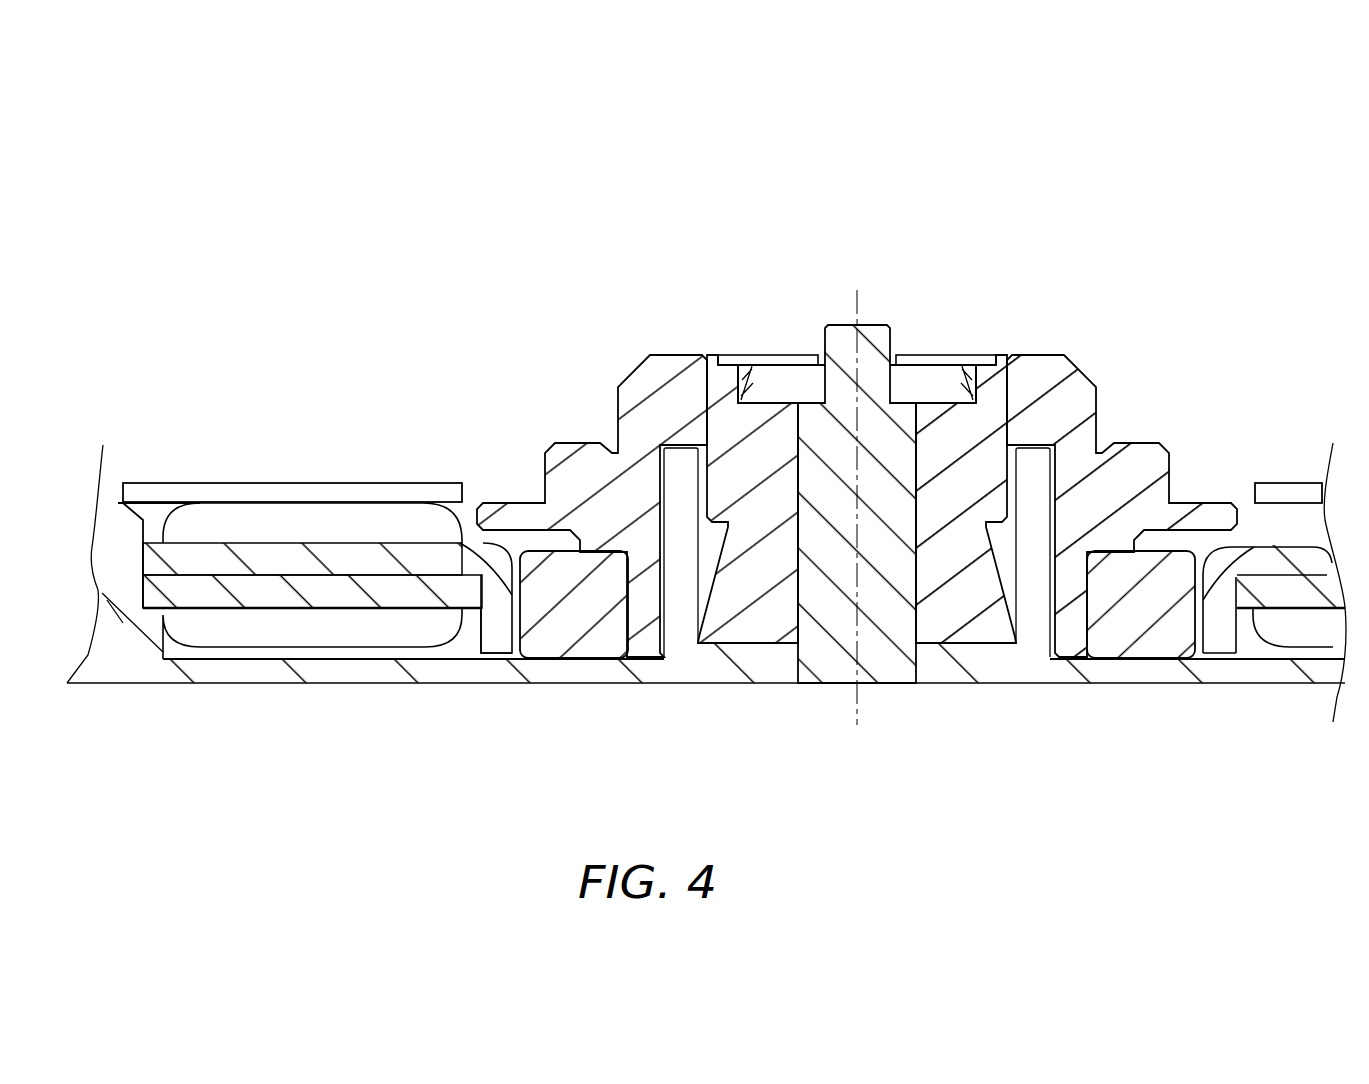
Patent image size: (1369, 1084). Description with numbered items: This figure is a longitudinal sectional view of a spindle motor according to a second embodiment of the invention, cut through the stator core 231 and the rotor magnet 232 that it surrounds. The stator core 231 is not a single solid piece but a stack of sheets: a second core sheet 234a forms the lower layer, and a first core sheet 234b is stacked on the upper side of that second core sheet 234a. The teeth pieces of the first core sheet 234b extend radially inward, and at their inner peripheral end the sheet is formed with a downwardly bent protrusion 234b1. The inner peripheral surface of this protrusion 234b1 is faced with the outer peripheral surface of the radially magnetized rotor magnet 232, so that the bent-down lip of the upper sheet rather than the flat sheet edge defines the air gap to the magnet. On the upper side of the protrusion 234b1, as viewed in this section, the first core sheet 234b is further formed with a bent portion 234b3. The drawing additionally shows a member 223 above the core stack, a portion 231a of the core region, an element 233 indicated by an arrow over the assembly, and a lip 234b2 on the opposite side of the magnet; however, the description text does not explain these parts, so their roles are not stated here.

The cover plate 223 is at (100, 592).
The stator core 231 is at (405, 449).
The housing inner portion 231a is at (287, 545).
The rotor magnet 232 is at (1125, 610).
The seal assembly 233 is at (243, 229).
The second core sheet 234a is at (203, 592).
The first core sheet 234b is at (202, 560).
The protrusion 234b1 is at (503, 623).
The second seal lip 234b2 is at (1230, 590).
The bent portion 234b3 is at (500, 563).